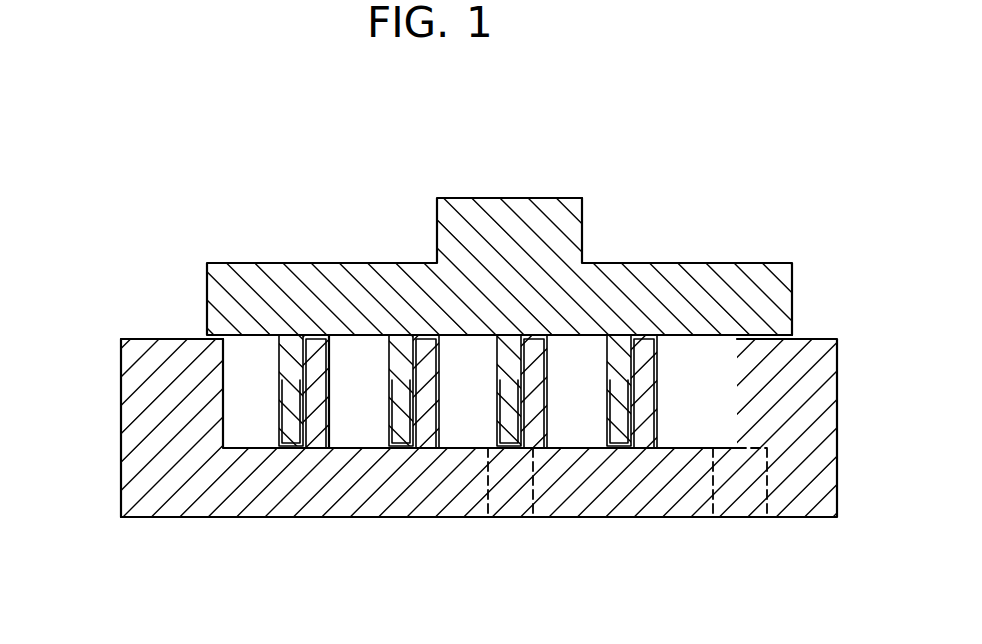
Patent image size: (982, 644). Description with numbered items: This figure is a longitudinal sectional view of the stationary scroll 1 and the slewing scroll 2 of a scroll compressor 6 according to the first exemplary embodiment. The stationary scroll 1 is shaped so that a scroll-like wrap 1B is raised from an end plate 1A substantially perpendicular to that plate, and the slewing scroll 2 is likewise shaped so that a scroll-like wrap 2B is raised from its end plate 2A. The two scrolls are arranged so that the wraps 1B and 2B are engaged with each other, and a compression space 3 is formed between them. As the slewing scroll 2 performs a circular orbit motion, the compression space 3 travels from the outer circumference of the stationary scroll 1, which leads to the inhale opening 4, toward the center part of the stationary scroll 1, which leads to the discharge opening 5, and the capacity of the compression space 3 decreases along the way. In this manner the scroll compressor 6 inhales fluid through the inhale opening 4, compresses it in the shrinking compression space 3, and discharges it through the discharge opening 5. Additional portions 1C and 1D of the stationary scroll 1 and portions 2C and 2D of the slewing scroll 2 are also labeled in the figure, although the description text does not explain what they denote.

The stationary scroll 1 is at (356, 522).
The end plate 1A is at (464, 495).
The wrap 1B is at (537, 398).
The recess 1C is at (225, 403).
The side wall 1D is at (301, 403).
The slewing scroll 2 is at (385, 256).
The end plate 2A is at (693, 285).
The wrap 2B is at (508, 383).
The coating layer 2C is at (328, 354).
The tip portion 2D is at (280, 427).
The compression space 3 is at (580, 365).
The inhale opening 4 is at (740, 482).
The discharge opening 5 is at (512, 478).
The scroll compressor 6 is at (114, 479).